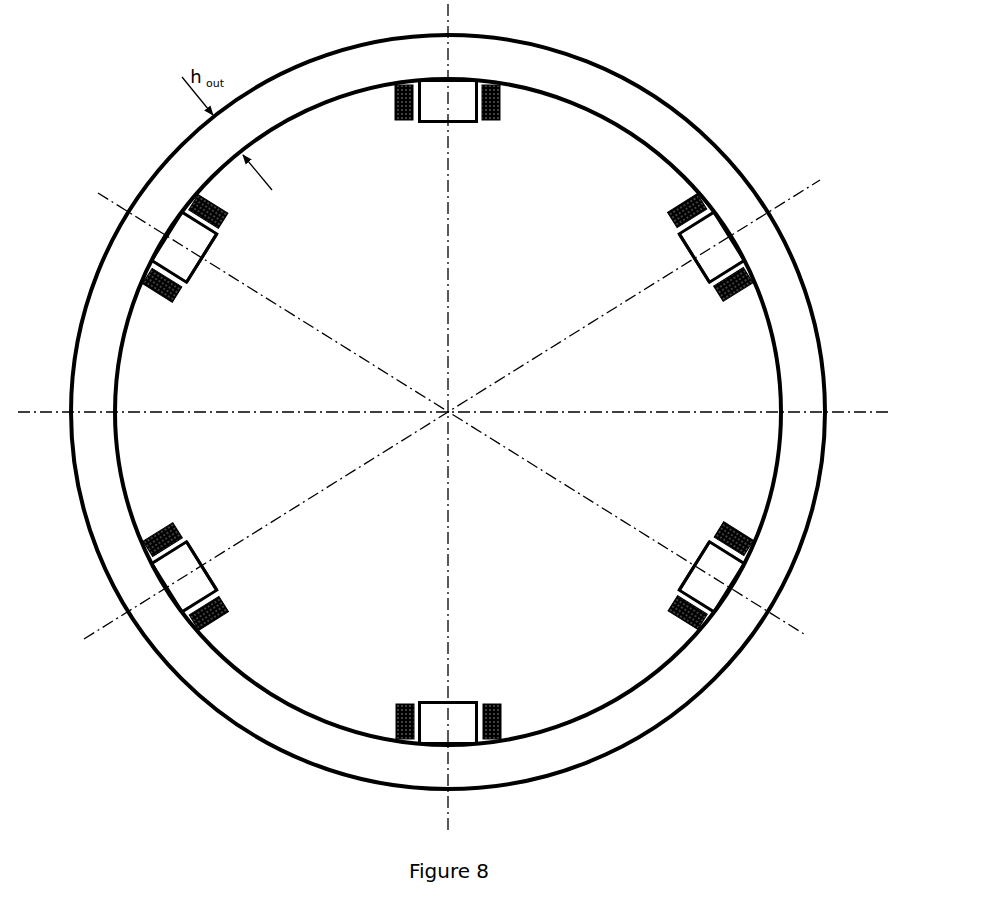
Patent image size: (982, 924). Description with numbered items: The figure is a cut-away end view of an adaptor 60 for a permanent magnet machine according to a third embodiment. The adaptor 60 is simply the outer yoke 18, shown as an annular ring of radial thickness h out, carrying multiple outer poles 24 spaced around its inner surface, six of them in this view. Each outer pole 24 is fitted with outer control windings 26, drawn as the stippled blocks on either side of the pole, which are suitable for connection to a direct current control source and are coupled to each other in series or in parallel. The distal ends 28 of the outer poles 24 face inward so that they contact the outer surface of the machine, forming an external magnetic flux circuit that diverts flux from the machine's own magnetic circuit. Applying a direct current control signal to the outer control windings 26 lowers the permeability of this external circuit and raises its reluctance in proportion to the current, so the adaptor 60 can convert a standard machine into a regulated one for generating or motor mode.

The outer yoke 18 is at (789, 490).
The outer poles 24 is at (425, 110).
The outer control windings 26 is at (395, 100).
The distal ends 28 is at (463, 123).
The adaptor 60 is at (158, 72).